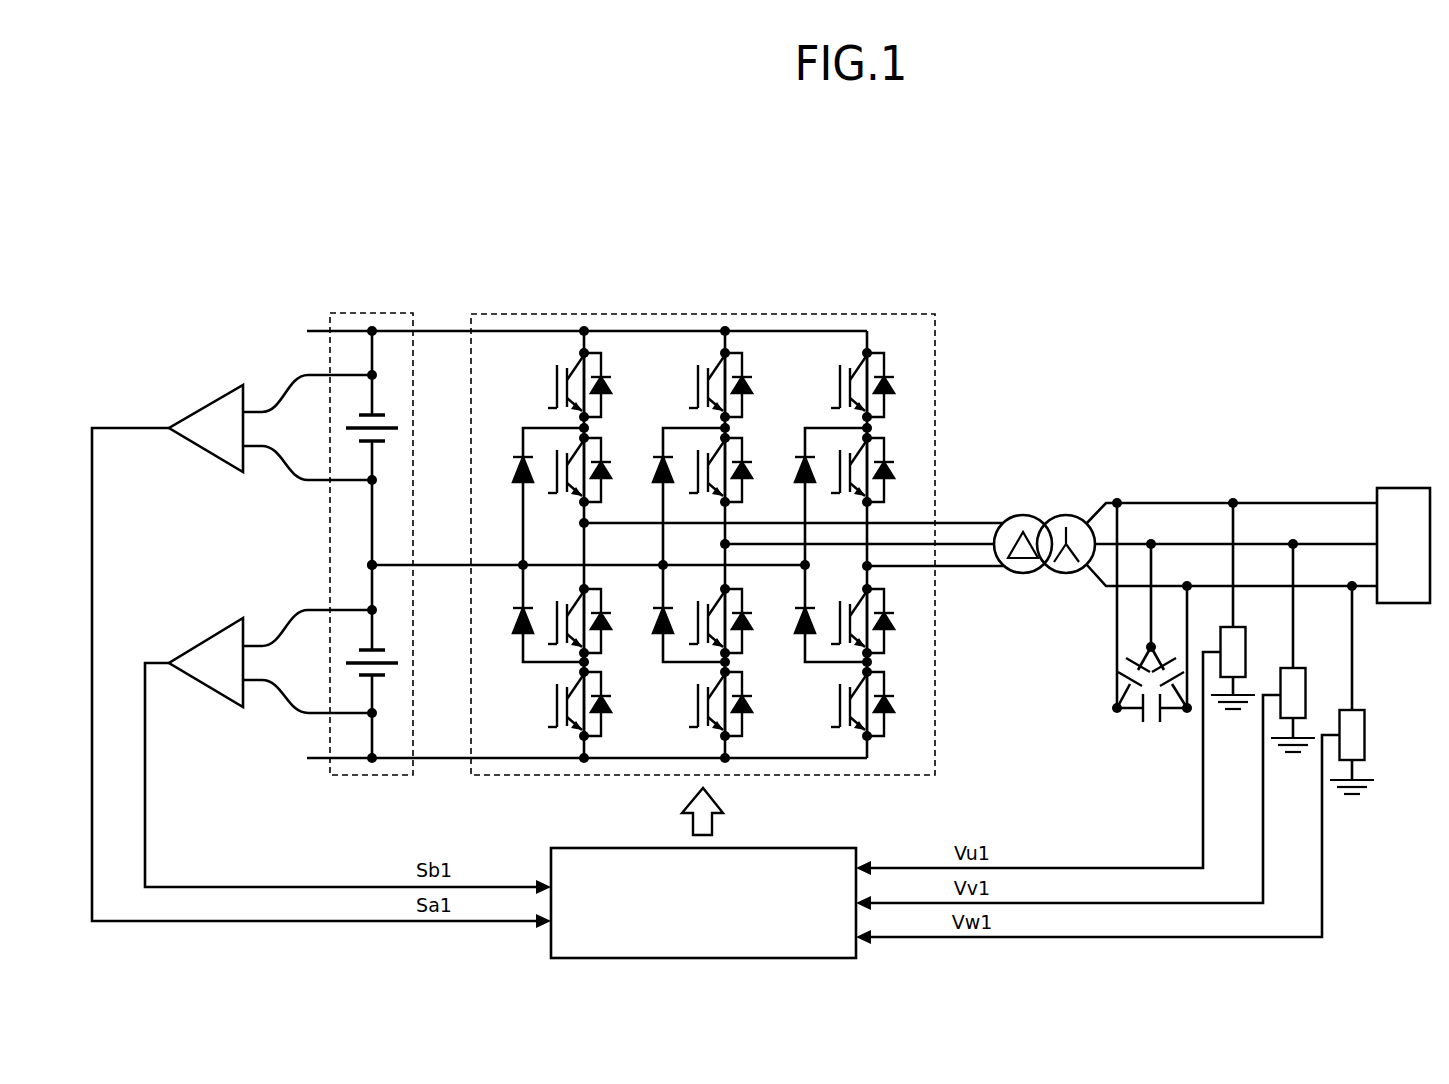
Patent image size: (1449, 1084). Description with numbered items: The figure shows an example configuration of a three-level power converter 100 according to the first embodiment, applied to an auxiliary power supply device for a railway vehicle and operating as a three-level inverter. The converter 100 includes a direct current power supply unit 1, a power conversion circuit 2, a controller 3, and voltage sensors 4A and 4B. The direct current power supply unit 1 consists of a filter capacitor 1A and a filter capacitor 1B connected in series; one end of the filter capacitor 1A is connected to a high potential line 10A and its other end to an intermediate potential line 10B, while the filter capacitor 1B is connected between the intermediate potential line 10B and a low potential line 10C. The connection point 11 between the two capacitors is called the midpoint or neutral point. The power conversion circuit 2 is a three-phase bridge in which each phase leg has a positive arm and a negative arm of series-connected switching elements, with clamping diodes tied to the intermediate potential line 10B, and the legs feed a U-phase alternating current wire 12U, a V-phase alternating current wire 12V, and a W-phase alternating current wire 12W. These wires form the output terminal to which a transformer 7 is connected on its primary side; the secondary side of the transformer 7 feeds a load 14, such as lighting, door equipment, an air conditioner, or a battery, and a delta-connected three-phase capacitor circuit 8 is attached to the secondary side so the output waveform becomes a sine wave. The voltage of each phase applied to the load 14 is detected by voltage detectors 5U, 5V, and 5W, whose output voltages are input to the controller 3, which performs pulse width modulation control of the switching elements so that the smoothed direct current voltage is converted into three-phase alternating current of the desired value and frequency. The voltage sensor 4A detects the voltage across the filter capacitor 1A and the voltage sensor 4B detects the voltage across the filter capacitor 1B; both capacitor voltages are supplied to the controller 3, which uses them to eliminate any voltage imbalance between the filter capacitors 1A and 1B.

The three-level power converter 100 is at (696, 261).
The direct current power supply unit 1 is at (372, 313).
The filter capacitor 1A is at (370, 440).
The filter capacitor 1B is at (370, 676).
The power conversion circuit 2 is at (897, 314).
The controller 3 is at (810, 848).
The voltage sensor 4A is at (209, 404).
The voltage sensor 4B is at (209, 639).
The voltage detector 5U is at (1248, 645).
The voltage detector 5V is at (1308, 685).
The voltage detector 5W is at (1368, 728).
The transformer 7 is at (1043, 512).
The delta-connected three-phase capacitor circuit 8 is at (1150, 733).
The high potential line 10A is at (442, 331).
The intermediate potential line 10B is at (442, 565).
The low potential line 10C is at (442, 758).
The connection point 11 is at (370, 546).
The U-phase alternating current wire 12U is at (971, 523).
The V-phase alternating current wire 12V is at (963, 546).
The W-phase alternating current wire 12W is at (990, 568).
The load 14 is at (1404, 488).